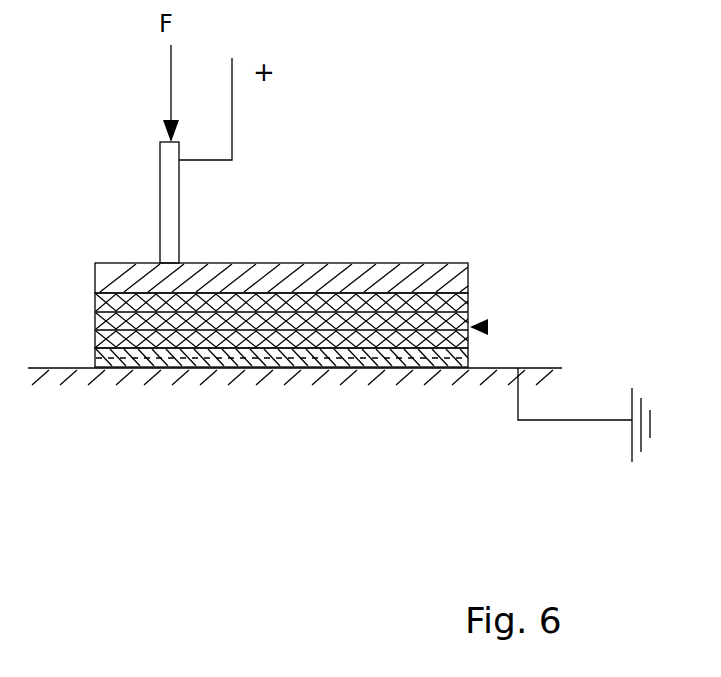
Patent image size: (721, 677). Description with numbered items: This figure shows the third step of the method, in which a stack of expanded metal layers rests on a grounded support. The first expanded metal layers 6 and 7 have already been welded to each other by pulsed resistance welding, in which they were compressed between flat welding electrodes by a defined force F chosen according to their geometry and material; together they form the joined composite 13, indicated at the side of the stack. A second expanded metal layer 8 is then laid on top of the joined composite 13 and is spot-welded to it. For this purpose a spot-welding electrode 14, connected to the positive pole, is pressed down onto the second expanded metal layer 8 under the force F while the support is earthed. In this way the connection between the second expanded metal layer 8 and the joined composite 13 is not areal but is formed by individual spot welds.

The spot-welding electrode 14 is at (168, 208).
The second expanded metal layer 8 is at (470, 283).
The first expanded metal layer 7 is at (97, 340).
The first expanded metal layer 6 is at (455, 355).
The joined composite 13 is at (486, 327).